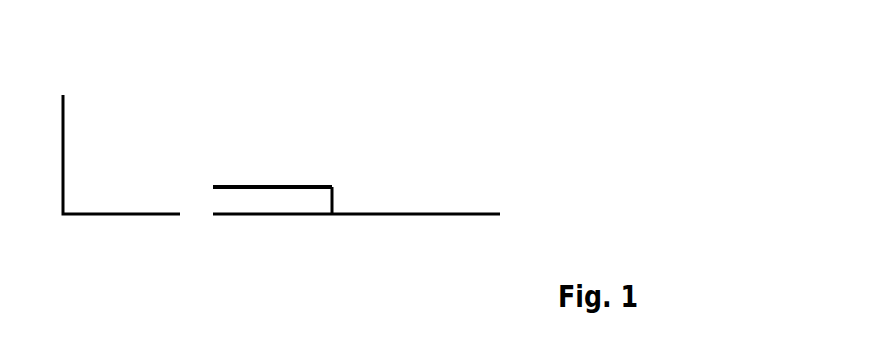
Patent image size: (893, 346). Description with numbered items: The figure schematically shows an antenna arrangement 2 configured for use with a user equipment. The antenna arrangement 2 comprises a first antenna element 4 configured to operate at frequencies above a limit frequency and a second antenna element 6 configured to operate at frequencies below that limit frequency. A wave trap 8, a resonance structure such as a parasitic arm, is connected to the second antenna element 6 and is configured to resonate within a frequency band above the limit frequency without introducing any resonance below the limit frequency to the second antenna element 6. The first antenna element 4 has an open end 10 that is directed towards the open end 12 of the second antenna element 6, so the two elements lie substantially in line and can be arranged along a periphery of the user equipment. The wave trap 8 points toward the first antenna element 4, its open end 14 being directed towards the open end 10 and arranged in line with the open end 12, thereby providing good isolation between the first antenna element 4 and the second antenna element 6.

The antenna arrangement 2 is at (487, 48).
The first antenna element 4 is at (103, 214).
The second antenna element 6 is at (353, 215).
The wave trap 8 is at (293, 187).
The open end 10 is at (176, 228).
The open end 12 is at (219, 228).
The open end 14 is at (220, 172).